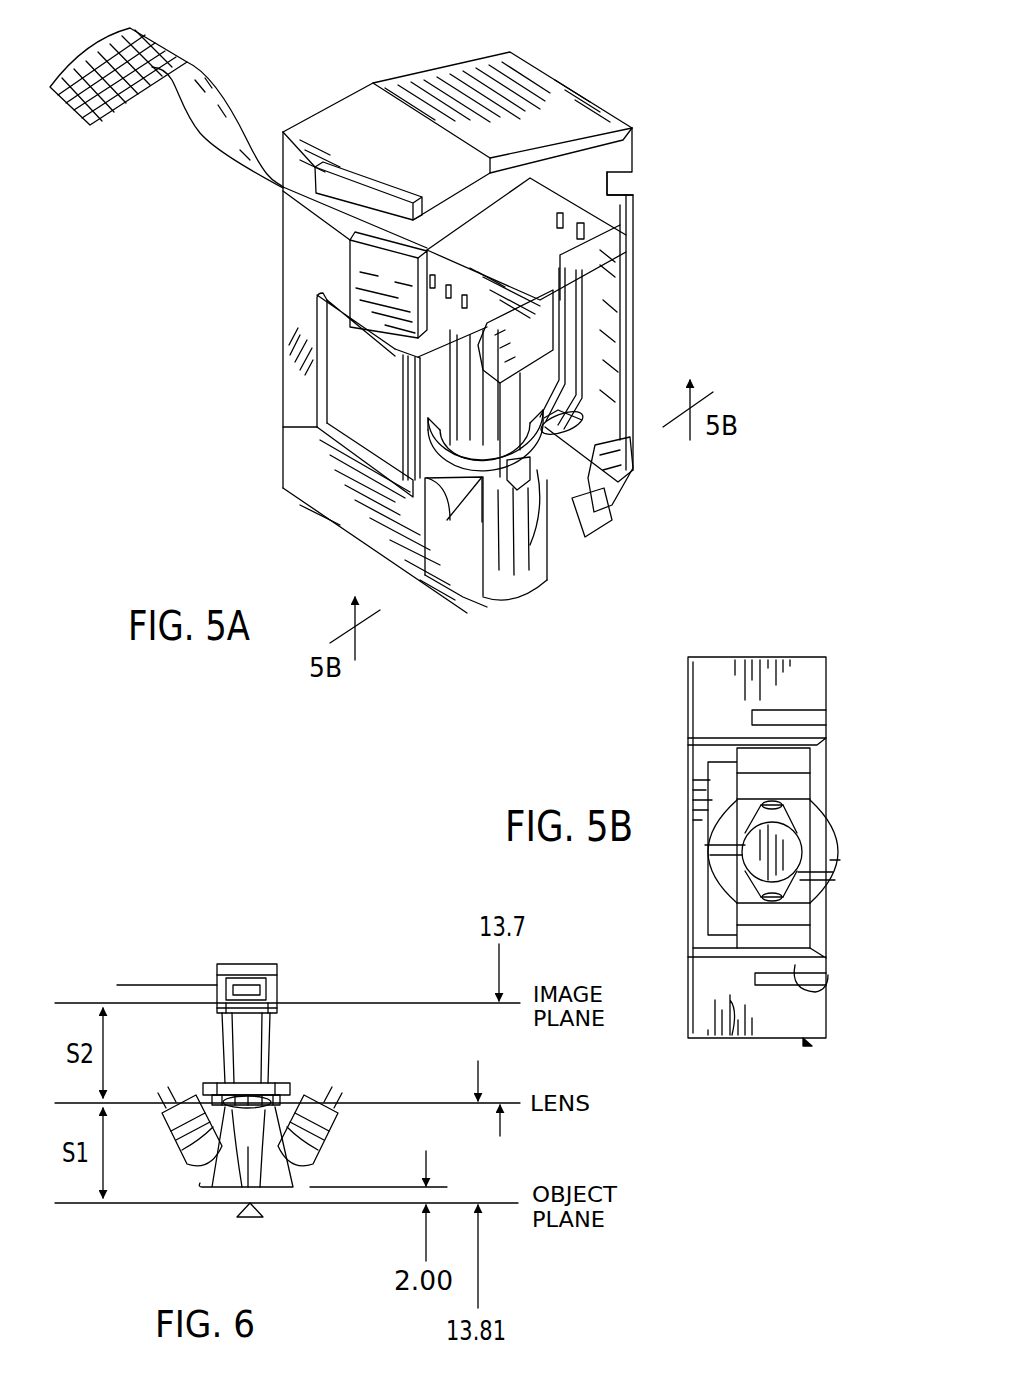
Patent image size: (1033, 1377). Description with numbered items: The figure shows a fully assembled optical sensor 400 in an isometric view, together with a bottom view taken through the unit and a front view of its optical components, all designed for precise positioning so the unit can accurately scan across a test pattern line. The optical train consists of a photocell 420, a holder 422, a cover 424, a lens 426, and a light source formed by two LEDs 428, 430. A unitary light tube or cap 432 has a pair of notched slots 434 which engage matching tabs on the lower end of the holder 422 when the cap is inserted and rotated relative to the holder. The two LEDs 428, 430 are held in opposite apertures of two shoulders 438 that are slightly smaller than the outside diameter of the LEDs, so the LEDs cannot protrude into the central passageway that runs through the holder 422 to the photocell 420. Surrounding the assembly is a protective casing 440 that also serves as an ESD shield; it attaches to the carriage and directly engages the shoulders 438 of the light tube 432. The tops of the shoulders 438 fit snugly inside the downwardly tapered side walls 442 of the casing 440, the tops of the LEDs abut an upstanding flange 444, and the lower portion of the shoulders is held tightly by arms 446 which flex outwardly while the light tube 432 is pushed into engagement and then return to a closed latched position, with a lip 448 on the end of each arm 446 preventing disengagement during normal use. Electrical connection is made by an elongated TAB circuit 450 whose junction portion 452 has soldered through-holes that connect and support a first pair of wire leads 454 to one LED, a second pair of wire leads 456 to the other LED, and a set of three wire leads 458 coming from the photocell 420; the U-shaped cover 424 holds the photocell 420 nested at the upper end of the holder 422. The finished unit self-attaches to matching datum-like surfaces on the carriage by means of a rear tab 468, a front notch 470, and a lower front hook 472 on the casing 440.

In FIG. 5A, the optical sensor 400 is at (262, 320).
In FIG. 5A, the photocell 420 is at (537, 575).
In FIG. 6, the photocell 420 is at (278, 988).
In FIG. 6, the holder 422 is at (272, 1057).
In FIG. 5A, the cover 424 is at (612, 308).
In FIG. 6, the cover 424 is at (242, 963).
In FIG. 5A, the lens 426 is at (562, 423).
In FIG. 5B, the lens 426 is at (787, 845).
In FIG. 6, the lens 426 is at (262, 1106).
In FIG. 5B, the LED 428 is at (826, 897).
In FIG. 6, the LED 428 is at (215, 1177).
In FIG. 5B, the LED 430 is at (805, 800).
In FIG. 6, the LED 430 is at (292, 1185).
In FIG. 5A, the light tube or cap 432 is at (543, 547).
In FIG. 5B, the light tube or cap 432 is at (836, 858).
In FIG. 5A, the notched slots 434 is at (603, 503).
In FIG. 5A, the shoulders 438 is at (473, 570).
In FIG. 5A, the protective casing 440 is at (610, 318).
In FIG. 5A, the downwardly tapered side walls 442 is at (347, 547).
In FIG. 5B, the downwardly tapered side walls 442 is at (717, 673).
In FIG. 5A, the upstanding flange 444 is at (395, 600).
In FIG. 5A, the arms 446 is at (593, 532).
In FIG. 5B, the arms 446 is at (825, 985).
In FIG. 5B, the lip 448 is at (813, 762).
In FIG. 5A, the TAB circuit 450 is at (207, 107).
In FIG. 5A, the junction portion 452 is at (534, 235).
In FIG. 5A, the first pair of wire leads 454 is at (582, 370).
In FIG. 5A, the second pair of wire leads 456 is at (407, 423).
In FIG. 5A, the set of three wire leads 458 is at (480, 278).
In FIG. 5A, the rear tab 468 is at (373, 275).
In FIG. 5A, the front notch 470 is at (622, 185).
In FIG. 5B, the lower front hook 472 is at (812, 1046).